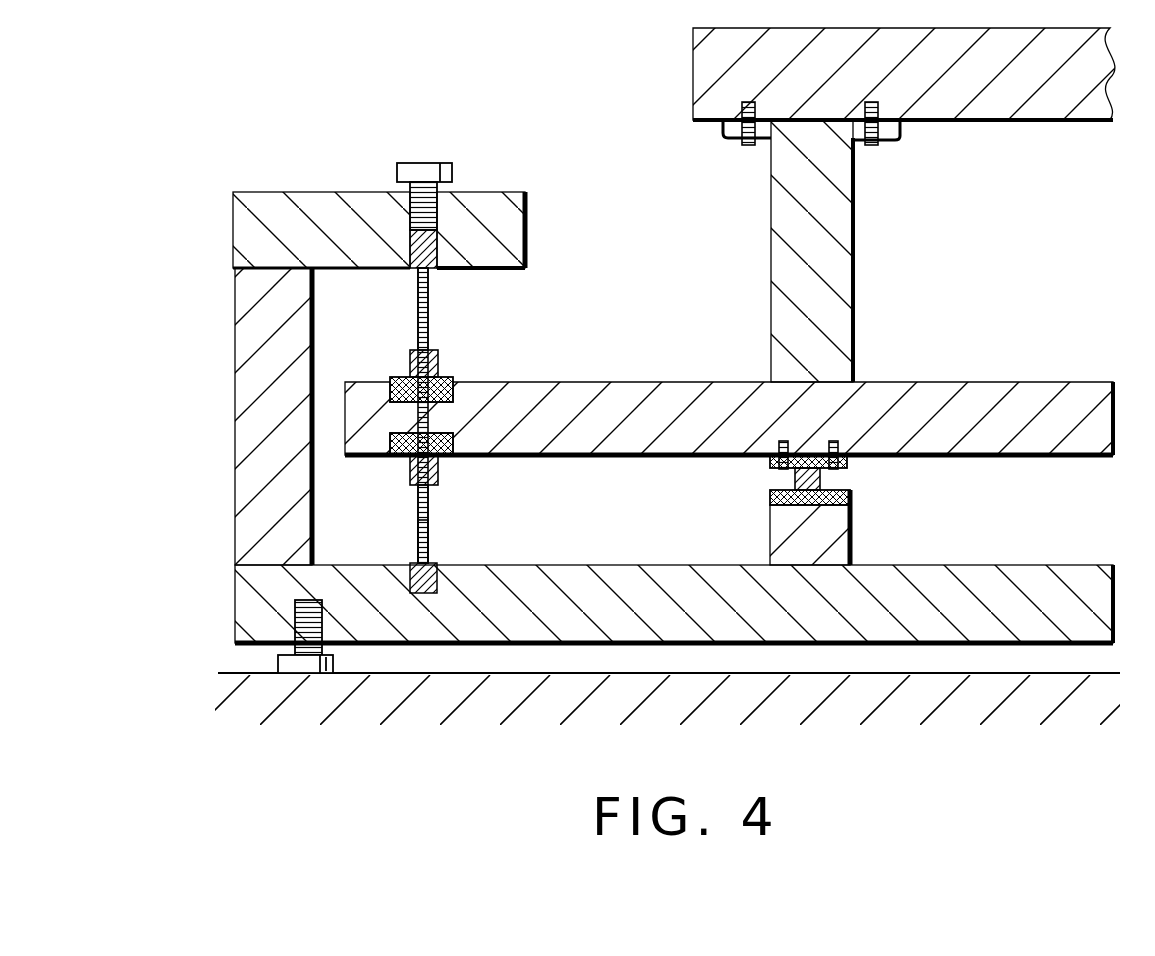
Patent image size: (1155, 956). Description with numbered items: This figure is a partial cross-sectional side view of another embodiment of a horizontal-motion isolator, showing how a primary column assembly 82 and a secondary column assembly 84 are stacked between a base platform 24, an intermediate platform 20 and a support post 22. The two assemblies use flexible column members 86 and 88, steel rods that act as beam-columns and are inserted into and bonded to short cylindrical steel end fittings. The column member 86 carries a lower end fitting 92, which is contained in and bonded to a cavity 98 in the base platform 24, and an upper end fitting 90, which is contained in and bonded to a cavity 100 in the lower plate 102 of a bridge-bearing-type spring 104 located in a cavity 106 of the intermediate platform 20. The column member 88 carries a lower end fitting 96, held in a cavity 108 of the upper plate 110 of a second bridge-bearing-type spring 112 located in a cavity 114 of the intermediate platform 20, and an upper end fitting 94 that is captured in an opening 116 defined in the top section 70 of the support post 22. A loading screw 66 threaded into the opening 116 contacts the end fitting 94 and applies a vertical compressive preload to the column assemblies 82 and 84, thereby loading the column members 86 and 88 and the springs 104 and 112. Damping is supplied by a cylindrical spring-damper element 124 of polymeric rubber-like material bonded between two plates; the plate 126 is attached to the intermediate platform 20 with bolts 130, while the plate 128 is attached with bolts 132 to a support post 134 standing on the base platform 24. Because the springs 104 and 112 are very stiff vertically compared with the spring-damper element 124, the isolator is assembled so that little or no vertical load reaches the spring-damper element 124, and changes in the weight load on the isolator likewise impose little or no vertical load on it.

The intermediate platform 20 is at (960, 382).
The support post 22 is at (235, 305).
The base platform 24 is at (1040, 565).
The loading screw 66 is at (425, 163).
The top section 70 is at (370, 192).
The primary column assembly 82 is at (455, 513).
The secondary column assembly 84 is at (462, 288).
The column member 86 is at (430, 545).
The column member 88 is at (430, 325).
The upper end fitting 90 is at (412, 472).
The lower end fitting 92 is at (418, 540).
The upper end fitting 94 is at (420, 285).
The lower end fitting 96 is at (410, 362).
The cavity 98 is at (437, 575).
The cavity 100 is at (400, 455).
The lower plate 102 is at (448, 455).
The bridge-bearing-type spring 104 is at (392, 440).
The cavity 106 is at (392, 458).
The cavity 108 is at (450, 380).
The upper plate 110 is at (395, 372).
The bridge-bearing-type spring 112 is at (392, 395).
The cavity 114 is at (465, 385).
The opening 116 is at (437, 250).
The spring-damper element 124 is at (822, 478).
The plate 126 is at (775, 462).
The plate 128 is at (785, 498).
The bolts 130 is at (783, 441).
The bolts 132 is at (850, 520).
The support post 134 is at (850, 548).